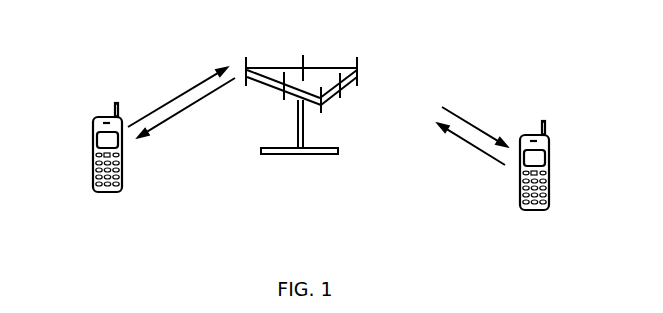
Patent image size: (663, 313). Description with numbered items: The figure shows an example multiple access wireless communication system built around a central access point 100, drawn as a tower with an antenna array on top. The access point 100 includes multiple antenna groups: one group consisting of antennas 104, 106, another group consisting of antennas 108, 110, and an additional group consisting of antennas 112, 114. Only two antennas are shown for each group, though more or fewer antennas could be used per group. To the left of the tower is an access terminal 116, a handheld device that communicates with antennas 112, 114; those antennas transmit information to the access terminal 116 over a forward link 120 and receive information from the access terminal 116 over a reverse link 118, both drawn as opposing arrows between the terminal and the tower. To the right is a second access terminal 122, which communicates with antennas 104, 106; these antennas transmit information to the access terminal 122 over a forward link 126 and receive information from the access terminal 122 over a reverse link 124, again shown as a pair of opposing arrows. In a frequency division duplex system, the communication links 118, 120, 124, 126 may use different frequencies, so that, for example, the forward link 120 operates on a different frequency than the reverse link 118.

The access point 100 is at (308, 155).
The antenna 104 is at (322, 108).
The antenna 106 is at (341, 97).
The antenna 108 is at (360, 77).
The antenna 110 is at (305, 55).
The antenna 112 is at (243, 58).
The antenna 114 is at (283, 100).
The access terminal 116 is at (95, 137).
The reverse link 118 is at (187, 90).
The forward link 120 is at (177, 113).
The access terminal 122 is at (548, 157).
The reverse link 124 is at (478, 150).
The forward link 126 is at (475, 128).